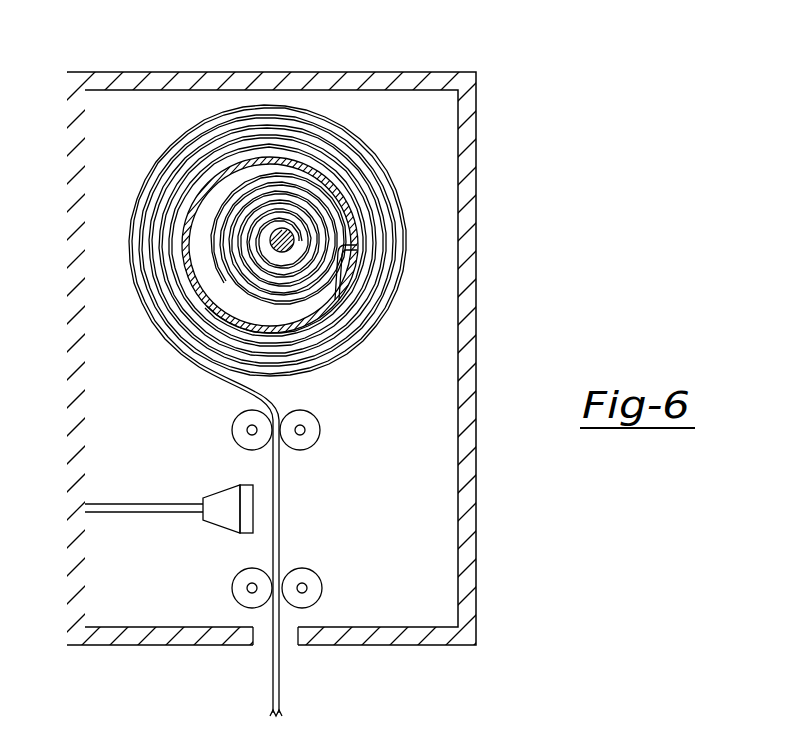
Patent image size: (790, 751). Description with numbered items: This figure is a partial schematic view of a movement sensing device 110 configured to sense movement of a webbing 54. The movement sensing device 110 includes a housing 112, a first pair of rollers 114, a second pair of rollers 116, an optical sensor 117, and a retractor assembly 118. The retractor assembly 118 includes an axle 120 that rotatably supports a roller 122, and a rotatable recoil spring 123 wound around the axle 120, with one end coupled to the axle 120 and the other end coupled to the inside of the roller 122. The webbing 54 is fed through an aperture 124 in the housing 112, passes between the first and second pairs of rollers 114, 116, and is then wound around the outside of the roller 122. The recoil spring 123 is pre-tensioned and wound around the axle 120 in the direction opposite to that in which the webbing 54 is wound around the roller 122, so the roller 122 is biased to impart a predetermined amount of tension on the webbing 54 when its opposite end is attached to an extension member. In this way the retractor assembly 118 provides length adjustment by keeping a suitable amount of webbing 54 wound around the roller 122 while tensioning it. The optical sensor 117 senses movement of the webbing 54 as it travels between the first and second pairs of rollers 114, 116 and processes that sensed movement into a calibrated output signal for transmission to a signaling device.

The webbing 54 is at (278, 702).
The movement sensing device 110 is at (487, 186).
The housing 112 is at (477, 316).
The first pair of rollers 114 is at (321, 427).
The second pair of rollers 116 is at (322, 583).
The optical sensor 117 is at (222, 535).
The retractor assembly 118 is at (355, 138).
The axle 120 is at (278, 253).
The roller 122 is at (352, 216).
The recoil spring 123 is at (215, 230).
The aperture 124 is at (250, 647).